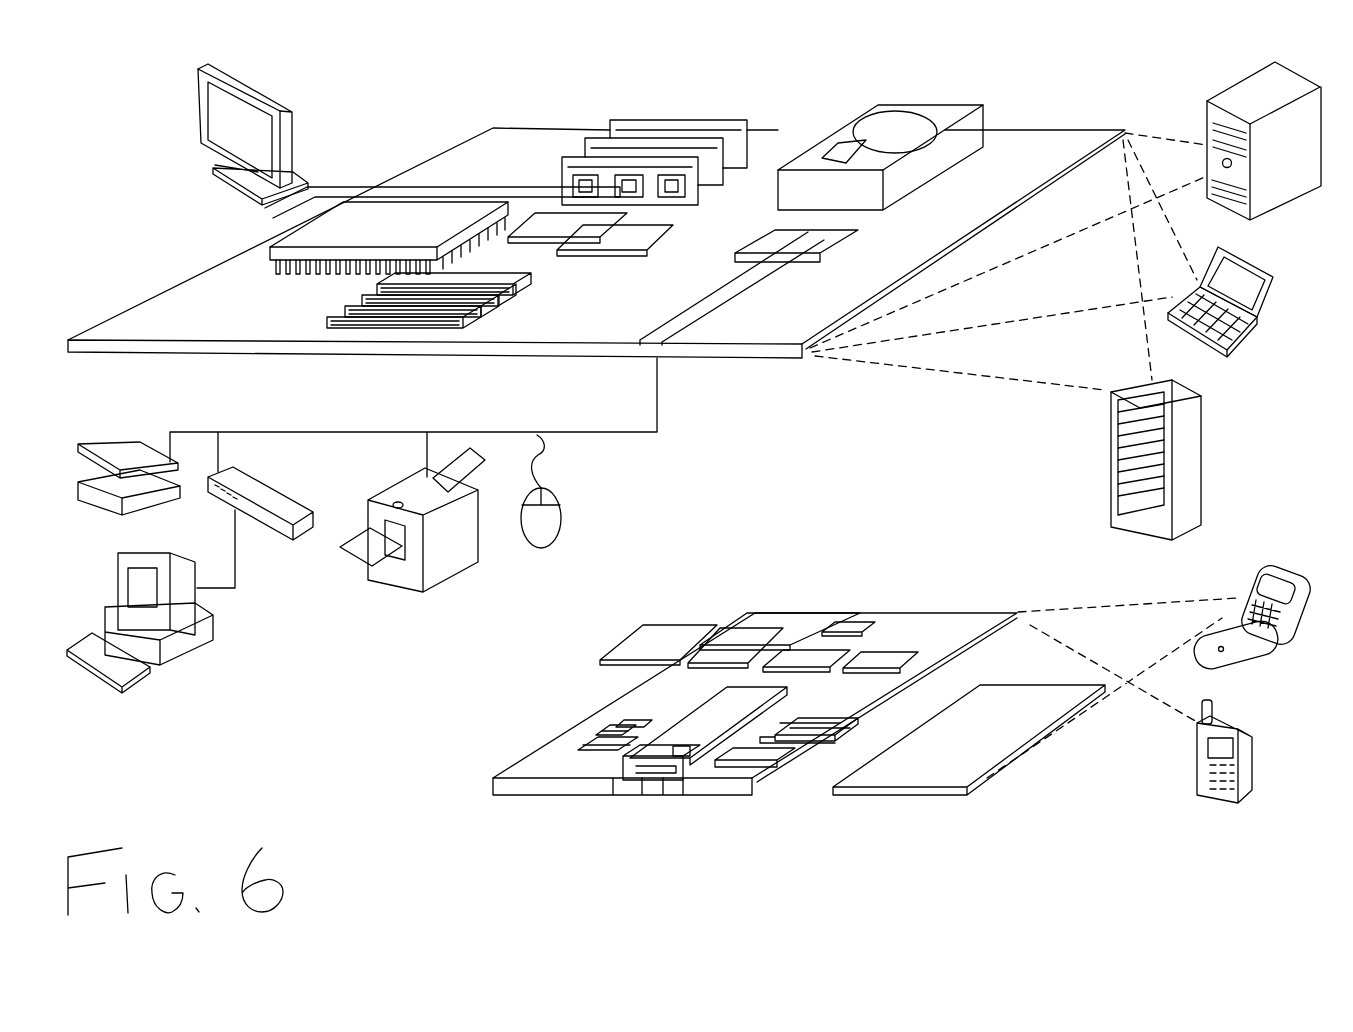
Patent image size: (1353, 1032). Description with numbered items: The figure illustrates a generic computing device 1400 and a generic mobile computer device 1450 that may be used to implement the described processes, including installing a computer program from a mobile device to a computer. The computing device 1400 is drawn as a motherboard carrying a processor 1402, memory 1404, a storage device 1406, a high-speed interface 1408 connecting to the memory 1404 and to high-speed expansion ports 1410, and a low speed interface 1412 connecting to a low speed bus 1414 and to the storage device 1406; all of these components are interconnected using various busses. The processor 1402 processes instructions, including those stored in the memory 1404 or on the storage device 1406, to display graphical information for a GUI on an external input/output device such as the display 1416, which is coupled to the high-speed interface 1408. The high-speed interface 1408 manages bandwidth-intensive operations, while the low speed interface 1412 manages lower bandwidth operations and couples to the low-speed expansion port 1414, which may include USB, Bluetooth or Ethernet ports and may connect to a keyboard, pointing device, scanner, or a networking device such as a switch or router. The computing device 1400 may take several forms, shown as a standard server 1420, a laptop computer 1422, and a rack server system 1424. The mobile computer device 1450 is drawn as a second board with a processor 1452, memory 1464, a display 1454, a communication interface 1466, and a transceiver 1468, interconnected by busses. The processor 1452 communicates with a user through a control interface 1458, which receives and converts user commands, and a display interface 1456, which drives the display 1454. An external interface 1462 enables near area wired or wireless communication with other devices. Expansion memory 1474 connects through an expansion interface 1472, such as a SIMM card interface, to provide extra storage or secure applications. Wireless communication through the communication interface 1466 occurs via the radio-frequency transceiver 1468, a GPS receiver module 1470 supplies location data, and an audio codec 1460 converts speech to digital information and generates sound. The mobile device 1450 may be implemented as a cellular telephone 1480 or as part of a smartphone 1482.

The computing device 1400 is at (413, 96).
The processor 1402 is at (234, 252).
The memory 1404 is at (620, 114).
The storage device 1406 is at (860, 106).
The high-speed interface 1408 is at (525, 183).
The high-speed expansion ports 1410 is at (327, 318).
The low speed interface 1412 is at (773, 240).
The low-speed expansion port 1414 is at (697, 345).
The display 1416 is at (195, 64).
The standard server 1420 is at (1207, 111).
The laptop computer 1422 is at (1278, 277).
The rack server system 1424 is at (1109, 480).
The mobile computer device 1450 is at (465, 797).
The processor 1452 is at (680, 748).
The display 1454 is at (930, 775).
The display interface 1456 is at (762, 750).
The control interface 1458 is at (800, 745).
The audio codec 1460 is at (823, 750).
The external interface 1462 is at (643, 788).
The memory 1464 is at (598, 738).
The communication interface 1466 is at (810, 645).
The transceiver 1468 is at (888, 657).
The GPS receiver module 1470 is at (858, 618).
The expansion interface 1472 is at (727, 627).
The expansion memory 1474 is at (655, 627).
The cellular telephone 1480 is at (1258, 573).
The smartphone 1482 is at (1198, 750).